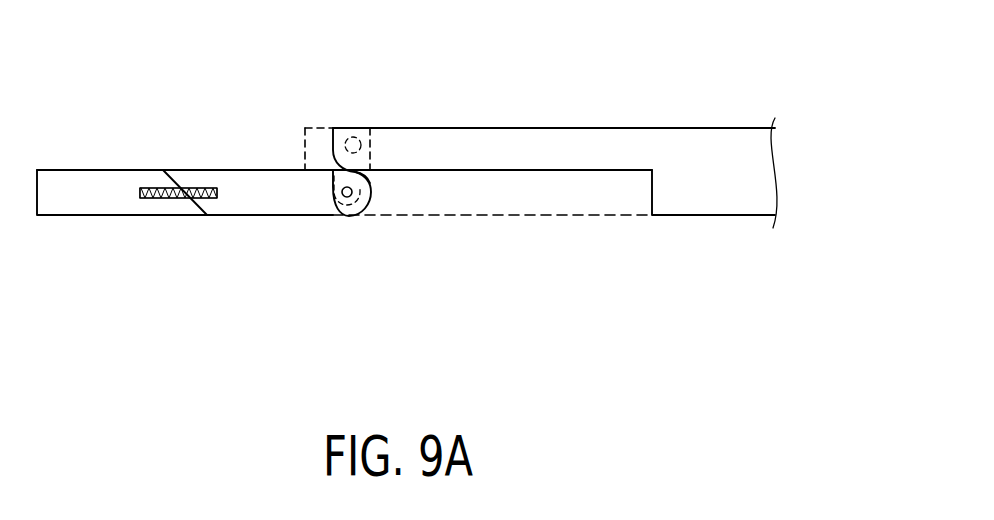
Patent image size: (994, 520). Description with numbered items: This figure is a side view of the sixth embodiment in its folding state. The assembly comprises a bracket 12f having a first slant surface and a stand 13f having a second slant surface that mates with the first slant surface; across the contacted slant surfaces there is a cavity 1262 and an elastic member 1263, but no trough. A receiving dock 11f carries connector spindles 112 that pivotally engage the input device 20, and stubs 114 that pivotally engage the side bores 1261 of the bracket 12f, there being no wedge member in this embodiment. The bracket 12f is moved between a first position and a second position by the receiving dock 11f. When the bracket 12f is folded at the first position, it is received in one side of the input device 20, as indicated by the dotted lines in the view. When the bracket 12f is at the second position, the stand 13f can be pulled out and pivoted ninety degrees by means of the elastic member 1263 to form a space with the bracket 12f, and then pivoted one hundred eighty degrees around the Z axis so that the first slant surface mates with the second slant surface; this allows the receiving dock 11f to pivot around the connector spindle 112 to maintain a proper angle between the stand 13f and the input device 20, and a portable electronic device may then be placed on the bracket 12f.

The receiving dock 11f is at (323, 120).
The bracket 12f is at (248, 158).
The stand 13f is at (97, 158).
The input device 20 is at (603, 140).
The connector spindle 112 is at (358, 138).
The stub 114 is at (352, 189).
The side bore 1261 is at (345, 196).
The cavity 1262 is at (148, 199).
The elastic member 1263 is at (170, 199).